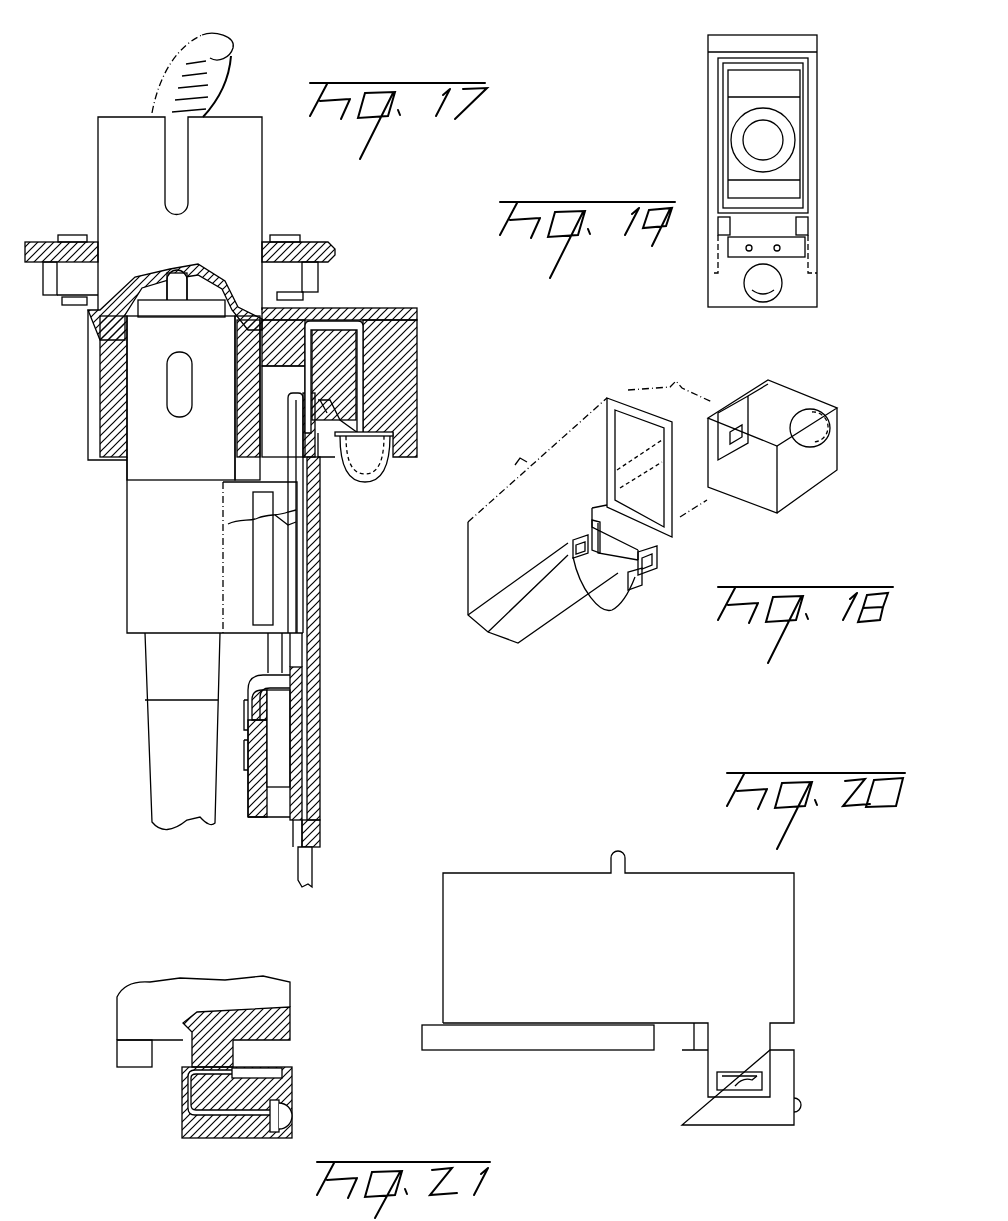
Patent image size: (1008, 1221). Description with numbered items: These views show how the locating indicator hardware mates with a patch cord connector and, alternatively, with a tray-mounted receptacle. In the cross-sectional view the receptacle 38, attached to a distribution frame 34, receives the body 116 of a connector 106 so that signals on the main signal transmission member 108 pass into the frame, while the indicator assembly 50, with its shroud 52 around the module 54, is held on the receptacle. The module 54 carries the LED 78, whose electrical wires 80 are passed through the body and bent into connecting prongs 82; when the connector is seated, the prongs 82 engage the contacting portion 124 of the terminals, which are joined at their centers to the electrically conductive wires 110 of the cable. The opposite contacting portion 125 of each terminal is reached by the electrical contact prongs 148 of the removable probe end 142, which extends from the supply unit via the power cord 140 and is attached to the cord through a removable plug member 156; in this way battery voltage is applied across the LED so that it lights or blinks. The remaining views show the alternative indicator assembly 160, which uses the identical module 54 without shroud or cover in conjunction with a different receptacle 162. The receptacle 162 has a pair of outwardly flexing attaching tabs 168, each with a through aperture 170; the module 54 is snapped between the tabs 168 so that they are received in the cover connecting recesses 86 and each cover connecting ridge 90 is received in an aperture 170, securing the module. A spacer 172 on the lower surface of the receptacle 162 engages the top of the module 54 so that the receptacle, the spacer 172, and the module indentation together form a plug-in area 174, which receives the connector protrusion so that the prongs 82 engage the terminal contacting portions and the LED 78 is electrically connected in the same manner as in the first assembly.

In FIG. 17, the telecommunication distribution frame 34 is at (303, 238).
In FIG. 20, the telecommunication distribution frame 34 is at (728, 1118).
In FIG. 17, the receptacle 38 is at (243, 177).
In FIG. 17, the indicator assembly 50 is at (352, 290).
In FIG. 17, the shroud 52 is at (410, 302).
In FIG. 17, the module 54 is at (392, 395).
In FIG. 18, the module 54 is at (813, 482).
In FIG. 21, the module 54 is at (205, 1138).
In FIG. 17, the LED 78 is at (370, 476).
In FIG. 19, the LED 78 is at (770, 287).
In FIG. 18, the LED 78 is at (820, 425).
In FIG. 20, the LED 78 is at (802, 1105).
In FIG. 21, the LED 78 is at (295, 1115).
In FIG. 17, the electrical wires 80 is at (363, 365).
In FIG. 17, the connecting prongs 82 is at (330, 400).
In FIG. 19, the connecting prongs 82 is at (782, 250).
In FIG. 21, the connecting prongs 82 is at (237, 1140).
In FIG. 18, the cover connecting recesses 86 is at (742, 413).
In FIG. 18, the cover connecting ridge 90 is at (736, 442).
In FIG. 20, the cover connecting ridge 90 is at (718, 1085).
In FIG. 17, the connector 106 is at (120, 533).
In FIG. 17, the main signal transmission member 108 is at (180, 272).
In FIG. 17, the electrically conductive wires 110 is at (265, 535).
In FIG. 17, the connector body 116 is at (127, 493).
In FIG. 17, the contacting portion 124 is at (258, 427).
In FIG. 17, the contacting portion 125 is at (307, 567).
In FIG. 17, the power cord 140 is at (300, 857).
In FIG. 17, the removable probe end 142 is at (330, 702).
In FIG. 17, the electrical contact prongs 148 is at (321, 613).
In FIG. 17, the removable plug member 156 is at (321, 808).
In FIG. 18, the alternative indicator assembly 160 is at (567, 408).
In FIG. 19, the receptacle 162 is at (690, 43).
In FIG. 18, the receptacle 162 is at (507, 487).
In FIG. 19, the attaching tabs 168 is at (815, 222).
In FIG. 18, the attaching tabs 168 is at (567, 542).
In FIG. 20, the attaching tabs 168 is at (772, 1033).
In FIG. 18, the through aperture 170 is at (610, 599).
In FIG. 20, the through aperture 170 is at (742, 1076).
In FIG. 19, the spacer 172 is at (745, 217).
In FIG. 18, the spacer 172 is at (620, 545).
In FIG. 20, the spacer 172 is at (692, 1037).
In FIG. 21, the spacer 172 is at (228, 1055).
In FIG. 19, the plug-in area 174 is at (795, 243).
In FIG. 21, the plug-in area 174 is at (302, 1066).